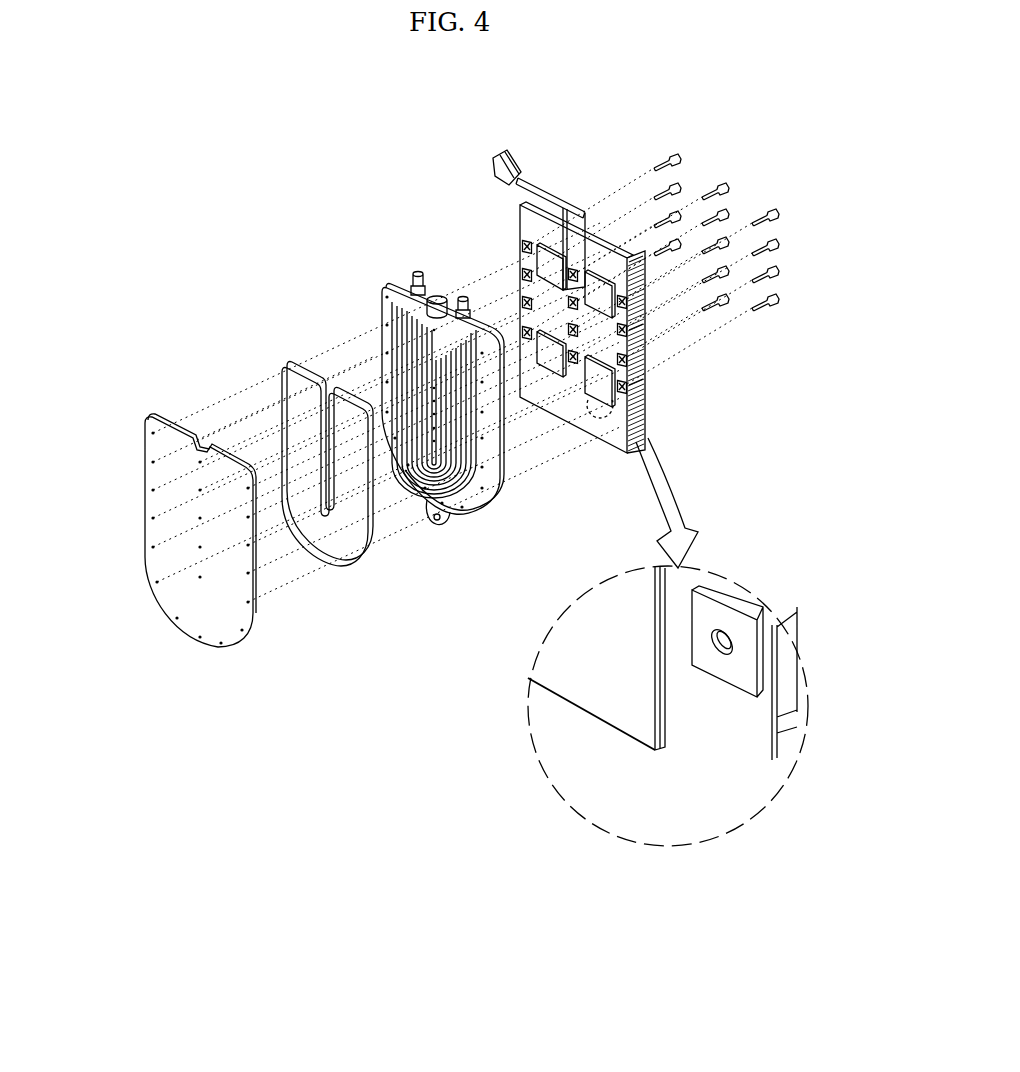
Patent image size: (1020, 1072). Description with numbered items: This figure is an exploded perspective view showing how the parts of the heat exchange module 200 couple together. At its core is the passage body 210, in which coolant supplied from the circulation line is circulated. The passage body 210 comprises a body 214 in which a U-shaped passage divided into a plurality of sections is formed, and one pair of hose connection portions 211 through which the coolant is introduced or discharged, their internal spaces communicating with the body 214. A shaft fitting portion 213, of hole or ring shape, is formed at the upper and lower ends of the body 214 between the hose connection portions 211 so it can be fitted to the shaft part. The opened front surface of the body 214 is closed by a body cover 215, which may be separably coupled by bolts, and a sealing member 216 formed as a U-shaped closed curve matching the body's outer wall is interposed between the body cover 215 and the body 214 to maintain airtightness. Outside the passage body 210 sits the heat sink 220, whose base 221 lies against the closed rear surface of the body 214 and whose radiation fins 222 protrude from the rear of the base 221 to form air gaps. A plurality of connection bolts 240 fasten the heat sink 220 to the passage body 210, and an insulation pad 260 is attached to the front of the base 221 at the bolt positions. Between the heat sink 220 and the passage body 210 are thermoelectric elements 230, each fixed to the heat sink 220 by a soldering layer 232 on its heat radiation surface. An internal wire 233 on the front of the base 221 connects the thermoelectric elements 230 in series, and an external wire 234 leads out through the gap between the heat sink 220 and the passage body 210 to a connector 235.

The heat exchange module 200 is at (380, 103).
The passage body 210 is at (502, 489).
The hose connection portions 211 is at (470, 296).
The shaft fitting portion 213 is at (436, 288).
The body 214 is at (428, 512).
The body cover 215 is at (152, 530).
The sealing member 216 is at (278, 393).
The heat sink 220 is at (610, 233).
The base 221 is at (658, 288).
The radiation fins 222 is at (648, 413).
The thermoelectric element 230 is at (520, 243).
The soldering layer 232 is at (670, 703).
The internal wire 233 is at (572, 200).
The external wire 234 is at (533, 190).
The connector 235 is at (492, 164).
The connection bolts 240 is at (772, 208).
The insulation pad 260 is at (640, 333).